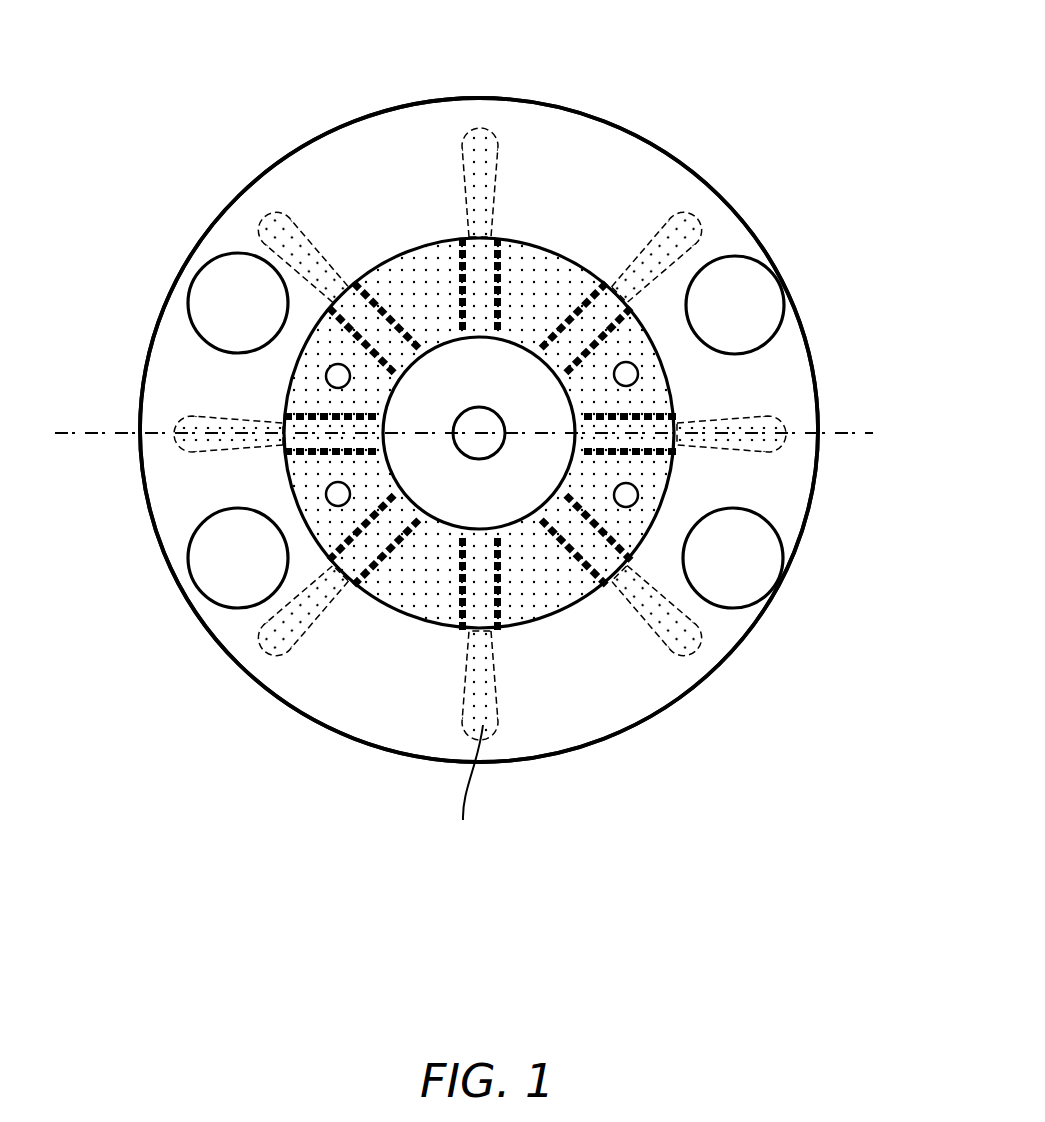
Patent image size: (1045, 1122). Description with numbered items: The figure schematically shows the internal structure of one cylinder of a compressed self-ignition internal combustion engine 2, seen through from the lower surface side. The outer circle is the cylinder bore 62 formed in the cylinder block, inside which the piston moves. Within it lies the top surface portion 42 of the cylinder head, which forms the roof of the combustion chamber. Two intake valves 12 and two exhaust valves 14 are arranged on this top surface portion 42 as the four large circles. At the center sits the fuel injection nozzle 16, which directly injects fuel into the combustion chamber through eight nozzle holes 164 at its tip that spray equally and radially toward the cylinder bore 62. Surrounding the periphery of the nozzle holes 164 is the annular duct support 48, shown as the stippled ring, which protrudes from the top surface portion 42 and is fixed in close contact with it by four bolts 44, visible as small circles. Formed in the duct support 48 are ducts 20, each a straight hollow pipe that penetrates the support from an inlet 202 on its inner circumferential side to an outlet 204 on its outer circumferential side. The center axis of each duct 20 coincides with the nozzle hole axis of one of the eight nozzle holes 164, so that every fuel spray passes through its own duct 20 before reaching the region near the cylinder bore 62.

The internal combustion engine 2 is at (493, 449).
The intake valve 12 is at (215, 288).
The exhaust valve 14 is at (750, 302).
The fuel injection nozzle 16 is at (462, 478).
The duct 20 is at (618, 445).
The top surface portion 42 is at (577, 197).
The bolt 44 is at (632, 495).
The duct support 48 is at (543, 572).
The cylinder bore 62 is at (543, 100).
The nozzle hole 164 is at (470, 417).
The inlet 202 is at (573, 432).
The outlet 204 is at (675, 432).